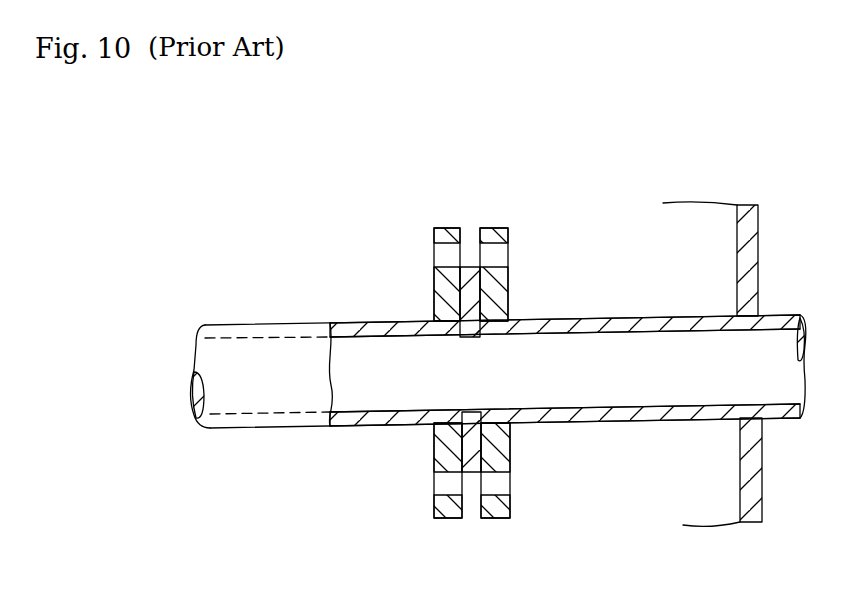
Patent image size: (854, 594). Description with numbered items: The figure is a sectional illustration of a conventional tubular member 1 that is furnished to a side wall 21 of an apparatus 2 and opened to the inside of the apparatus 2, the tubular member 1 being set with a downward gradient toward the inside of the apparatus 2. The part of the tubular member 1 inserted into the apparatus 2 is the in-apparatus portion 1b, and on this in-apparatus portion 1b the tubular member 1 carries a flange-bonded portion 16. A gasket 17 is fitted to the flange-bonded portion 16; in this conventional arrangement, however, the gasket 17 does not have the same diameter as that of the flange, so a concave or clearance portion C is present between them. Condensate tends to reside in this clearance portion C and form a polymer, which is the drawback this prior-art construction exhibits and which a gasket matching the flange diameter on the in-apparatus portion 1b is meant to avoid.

The tubular member 1 is at (779, 318).
The in-apparatus portion 1b is at (275, 325).
The flange-bonded portion 16 is at (508, 228).
The gasket 17 is at (510, 445).
The side wall 21 is at (750, 232).
The apparatus 2 is at (705, 246).
The concave (clearance) portion C is at (467, 227).